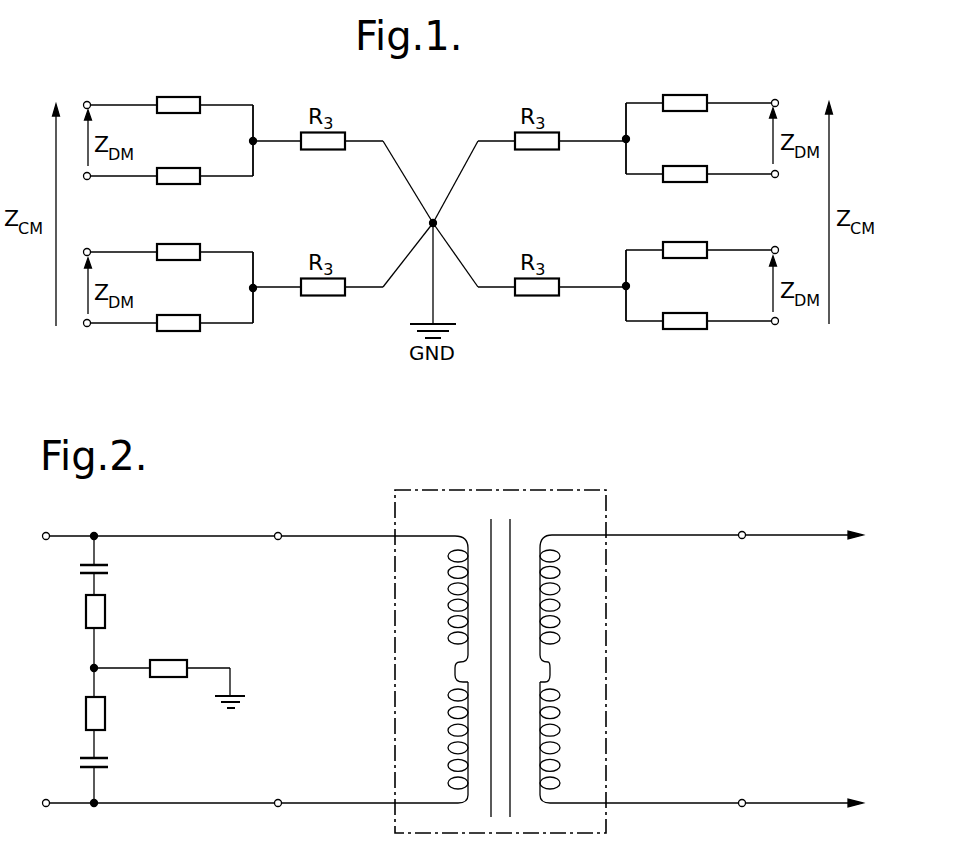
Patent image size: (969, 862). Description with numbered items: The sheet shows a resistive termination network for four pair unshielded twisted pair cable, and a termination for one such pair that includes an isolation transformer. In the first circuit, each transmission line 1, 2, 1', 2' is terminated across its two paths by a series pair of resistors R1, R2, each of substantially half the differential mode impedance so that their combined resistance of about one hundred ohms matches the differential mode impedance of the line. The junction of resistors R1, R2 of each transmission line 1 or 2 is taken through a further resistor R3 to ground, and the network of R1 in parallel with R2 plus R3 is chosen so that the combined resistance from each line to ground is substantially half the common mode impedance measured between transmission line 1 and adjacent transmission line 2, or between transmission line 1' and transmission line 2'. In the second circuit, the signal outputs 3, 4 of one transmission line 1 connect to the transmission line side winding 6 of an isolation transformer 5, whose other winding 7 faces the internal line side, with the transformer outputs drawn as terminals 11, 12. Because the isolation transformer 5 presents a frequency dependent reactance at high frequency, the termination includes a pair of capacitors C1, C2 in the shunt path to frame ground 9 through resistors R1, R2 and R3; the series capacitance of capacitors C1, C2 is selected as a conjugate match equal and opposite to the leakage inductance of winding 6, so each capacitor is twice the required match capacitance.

In FIG. 1, the transmission line 1 is at (185, 108).
In FIG. 2, the transmission line 1 is at (159, 642).
In FIG. 1, the transmission line 1' is at (715, 103).
In FIG. 1, the transmission line 2 is at (175, 306).
In FIG. 1, the transmission line 2' is at (713, 305).
In FIG. 2, the signal output 3 is at (280, 532).
In FIG. 2, the signal output 4 is at (278, 807).
In FIG. 2, the isolation transformer 5 is at (510, 674).
In FIG. 2, the transmission line side winding 6 is at (448, 786).
In FIG. 2, the other winding 7 is at (553, 735).
In FIG. 2, the frame ground 9 is at (240, 693).
In FIG. 2, the output terminal 11 is at (745, 531).
In FIG. 2, the output terminal 12 is at (745, 799).
In FIG. 2, the capacitor C1 is at (108, 565).
In FIG. 2, the capacitor C2 is at (105, 762).
In FIG. 2, the resistor R1 is at (103, 612).
In FIG. 2, the resistor R2 is at (103, 718).
In FIG. 2, the resistor R3 is at (180, 668).